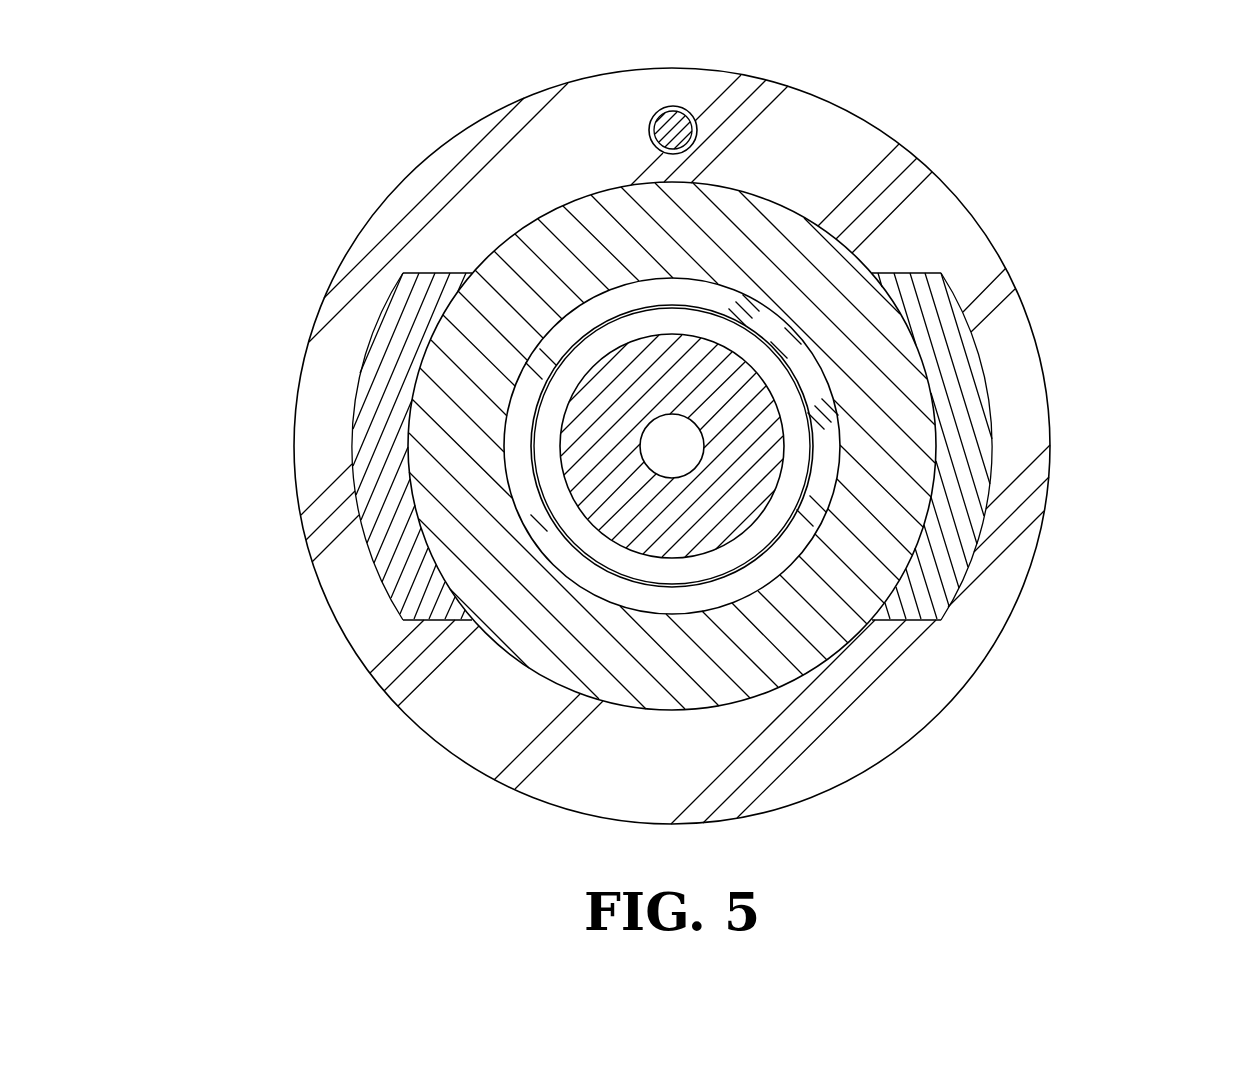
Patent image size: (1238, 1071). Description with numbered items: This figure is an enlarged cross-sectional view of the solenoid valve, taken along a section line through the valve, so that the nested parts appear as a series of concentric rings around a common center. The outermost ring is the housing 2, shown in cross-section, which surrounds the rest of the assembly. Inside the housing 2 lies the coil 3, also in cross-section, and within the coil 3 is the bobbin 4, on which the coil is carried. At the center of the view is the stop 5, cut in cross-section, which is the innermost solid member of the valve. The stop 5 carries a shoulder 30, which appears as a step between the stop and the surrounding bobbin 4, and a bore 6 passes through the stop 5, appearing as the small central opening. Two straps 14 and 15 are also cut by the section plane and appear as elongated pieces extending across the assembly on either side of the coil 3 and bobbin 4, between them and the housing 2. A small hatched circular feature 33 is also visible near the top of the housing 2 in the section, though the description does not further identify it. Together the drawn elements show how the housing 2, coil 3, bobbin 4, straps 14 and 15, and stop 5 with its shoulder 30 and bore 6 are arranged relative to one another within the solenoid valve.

The housing 2 is at (927, 672).
The coil 3 is at (848, 333).
The bobbin 4 is at (542, 360).
The stop 5 is at (620, 507).
The bore 6 is at (645, 425).
The strap 14 is at (400, 517).
The strap 15 is at (965, 440).
The shoulder 30 is at (760, 540).
The pin 33 is at (690, 112).